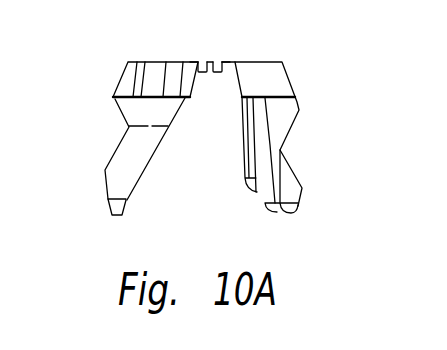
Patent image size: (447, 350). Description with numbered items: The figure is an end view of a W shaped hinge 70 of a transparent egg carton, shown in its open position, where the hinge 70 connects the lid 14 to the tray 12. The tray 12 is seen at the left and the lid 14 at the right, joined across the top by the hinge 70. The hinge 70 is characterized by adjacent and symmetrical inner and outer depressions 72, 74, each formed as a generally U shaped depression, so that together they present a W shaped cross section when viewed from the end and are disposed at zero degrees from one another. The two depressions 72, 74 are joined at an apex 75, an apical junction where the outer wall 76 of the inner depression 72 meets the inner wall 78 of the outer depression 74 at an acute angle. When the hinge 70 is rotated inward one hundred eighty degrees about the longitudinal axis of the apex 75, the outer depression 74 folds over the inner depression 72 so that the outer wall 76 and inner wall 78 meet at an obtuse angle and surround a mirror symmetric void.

The tray 12 is at (78, 62).
The lid 14 is at (332, 66).
The W shaped hinge 70 is at (203, 109).
The inner depression 72 is at (200, 73).
The outer depression 74 is at (222, 74).
The apex 75 is at (210, 63).
The outer wall of the inner depression 76 is at (203, 65).
The inner wall of the outer depression 78 is at (220, 63).